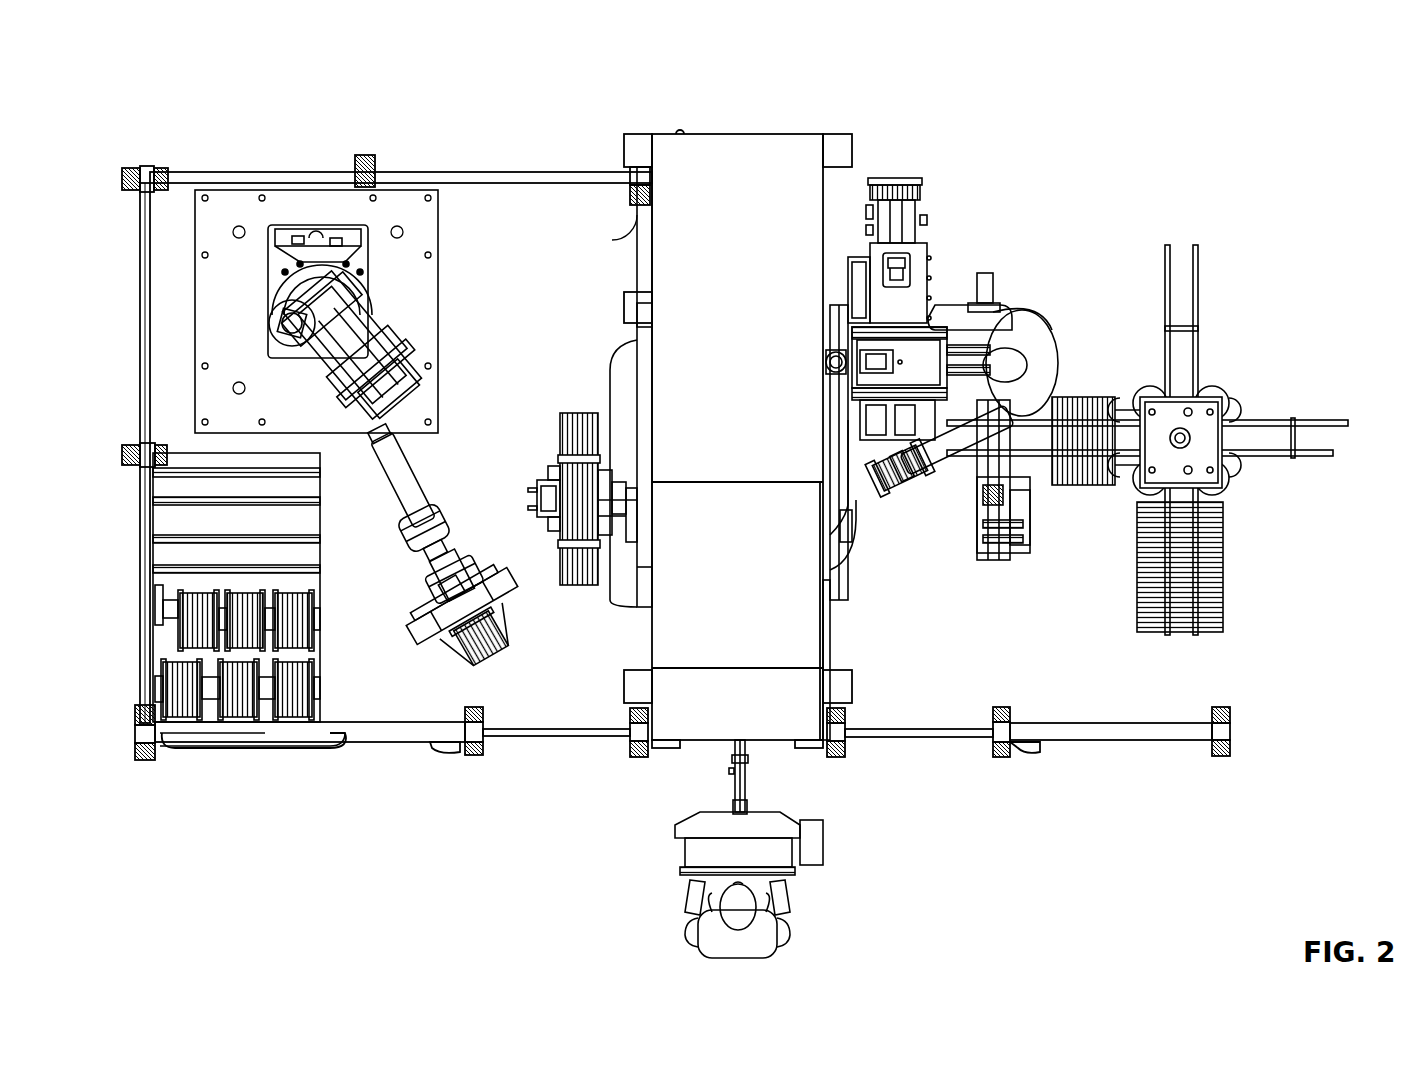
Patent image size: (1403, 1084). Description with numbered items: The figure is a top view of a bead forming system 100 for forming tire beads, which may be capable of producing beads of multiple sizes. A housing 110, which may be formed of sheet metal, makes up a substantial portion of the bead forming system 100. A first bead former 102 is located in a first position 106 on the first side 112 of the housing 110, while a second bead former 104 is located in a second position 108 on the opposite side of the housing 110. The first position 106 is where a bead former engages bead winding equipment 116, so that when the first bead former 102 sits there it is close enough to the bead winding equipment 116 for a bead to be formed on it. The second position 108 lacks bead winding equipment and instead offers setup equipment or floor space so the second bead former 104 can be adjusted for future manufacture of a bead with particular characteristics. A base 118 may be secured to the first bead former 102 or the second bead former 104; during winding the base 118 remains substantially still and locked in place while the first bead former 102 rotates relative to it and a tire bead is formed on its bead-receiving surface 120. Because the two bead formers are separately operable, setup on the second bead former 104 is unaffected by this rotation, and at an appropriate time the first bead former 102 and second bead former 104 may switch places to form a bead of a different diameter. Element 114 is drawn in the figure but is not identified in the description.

The bead forming system 100 is at (228, 72).
The first bead former 102 is at (893, 485).
The second bead former 104 is at (577, 587).
The first position 106 is at (900, 172).
The second position 108 is at (578, 402).
The housing 110 is at (712, 142).
The first side 112 is at (828, 628).
The upper bracket 114 is at (643, 225).
The bead winding equipment 116 is at (920, 300).
The base 118 is at (640, 355).
The bead-receiving surface 120 is at (560, 410).